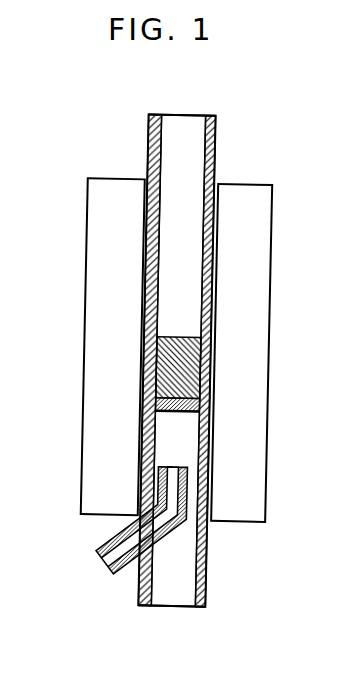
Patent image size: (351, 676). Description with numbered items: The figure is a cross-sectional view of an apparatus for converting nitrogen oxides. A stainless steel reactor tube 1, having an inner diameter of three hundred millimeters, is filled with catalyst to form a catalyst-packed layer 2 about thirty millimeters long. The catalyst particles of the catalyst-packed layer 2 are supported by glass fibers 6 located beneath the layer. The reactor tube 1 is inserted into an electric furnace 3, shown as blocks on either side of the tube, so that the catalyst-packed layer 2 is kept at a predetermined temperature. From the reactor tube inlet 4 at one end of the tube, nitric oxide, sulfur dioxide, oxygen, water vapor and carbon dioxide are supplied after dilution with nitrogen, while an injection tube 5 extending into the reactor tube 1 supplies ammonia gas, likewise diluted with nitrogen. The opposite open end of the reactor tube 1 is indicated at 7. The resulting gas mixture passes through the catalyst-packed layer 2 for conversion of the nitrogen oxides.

The reactor tube 1 is at (216, 139).
The catalyst-packed layer 2 is at (197, 370).
The electric furnace 3 is at (91, 280).
The reactor tube inlet 4 is at (175, 606).
The injection tube 5 is at (177, 523).
The glass fibers 6 is at (178, 411).
The top open end of tube 7 is at (173, 115).